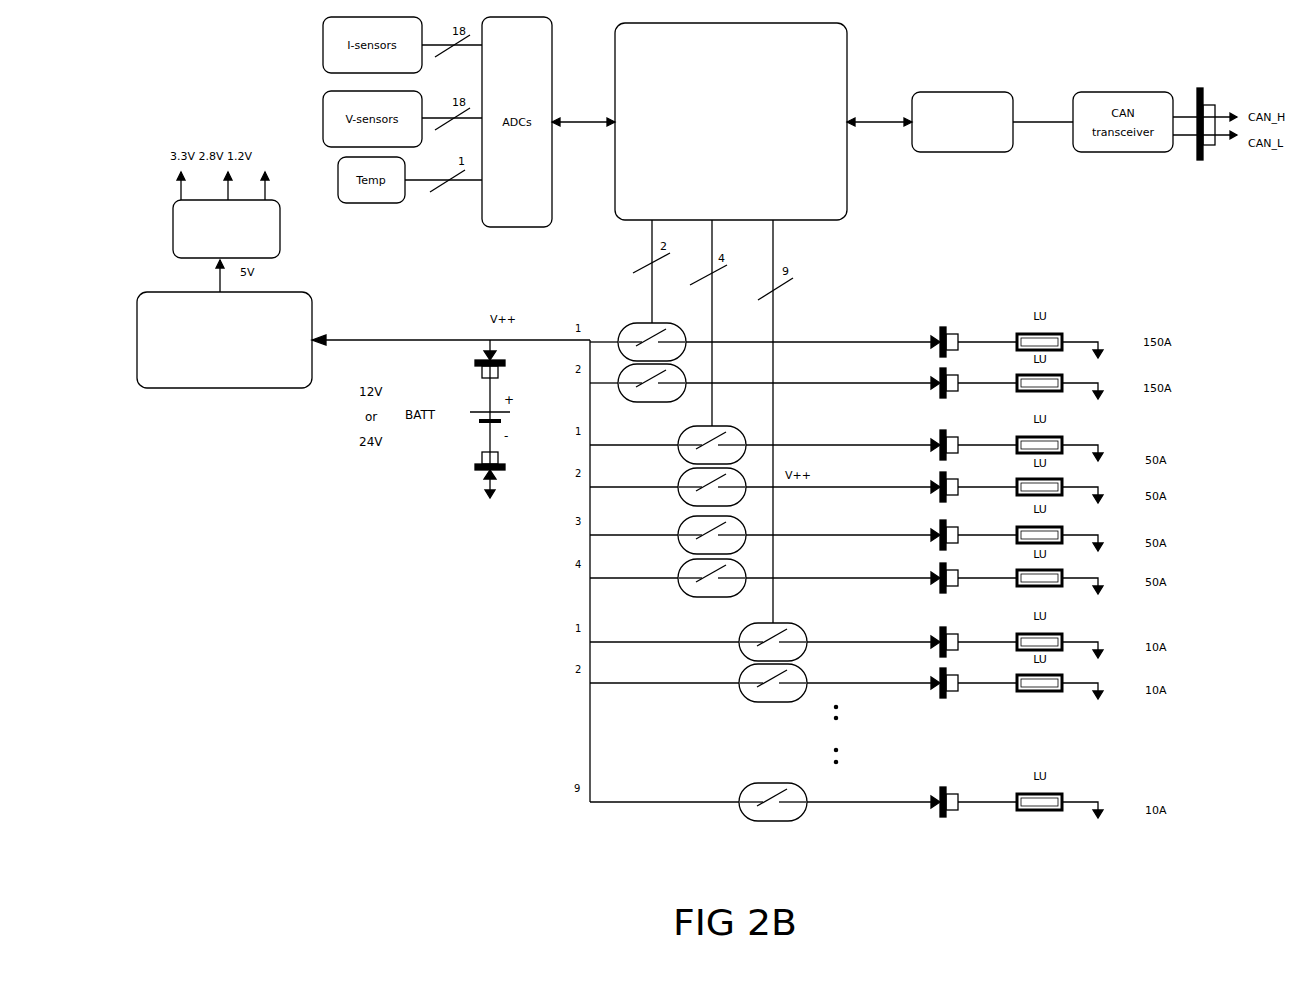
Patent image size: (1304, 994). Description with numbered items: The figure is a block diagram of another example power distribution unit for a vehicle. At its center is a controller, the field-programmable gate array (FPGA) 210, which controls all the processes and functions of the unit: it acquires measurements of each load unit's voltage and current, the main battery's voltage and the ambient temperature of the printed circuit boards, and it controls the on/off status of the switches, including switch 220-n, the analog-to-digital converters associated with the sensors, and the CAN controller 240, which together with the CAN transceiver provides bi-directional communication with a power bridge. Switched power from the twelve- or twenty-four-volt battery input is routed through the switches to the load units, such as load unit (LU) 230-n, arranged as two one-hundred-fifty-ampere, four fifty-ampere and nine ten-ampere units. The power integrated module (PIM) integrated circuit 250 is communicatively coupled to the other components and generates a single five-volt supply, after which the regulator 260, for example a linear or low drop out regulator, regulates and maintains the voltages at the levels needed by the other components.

The field-programmable gate array (FPGA) 210 is at (835, 60).
The switch 220-n is at (752, 785).
The load unit (LU) 230-n is at (1020, 793).
The CAN controller 240 is at (965, 92).
The power integrated module (PIM) integrated circuit (IC) 250 is at (190, 378).
The regulator 260 is at (280, 222).